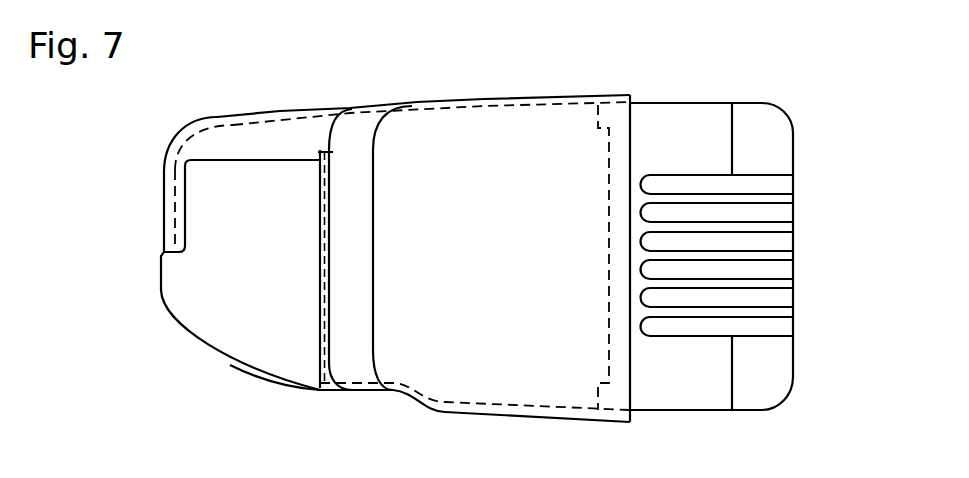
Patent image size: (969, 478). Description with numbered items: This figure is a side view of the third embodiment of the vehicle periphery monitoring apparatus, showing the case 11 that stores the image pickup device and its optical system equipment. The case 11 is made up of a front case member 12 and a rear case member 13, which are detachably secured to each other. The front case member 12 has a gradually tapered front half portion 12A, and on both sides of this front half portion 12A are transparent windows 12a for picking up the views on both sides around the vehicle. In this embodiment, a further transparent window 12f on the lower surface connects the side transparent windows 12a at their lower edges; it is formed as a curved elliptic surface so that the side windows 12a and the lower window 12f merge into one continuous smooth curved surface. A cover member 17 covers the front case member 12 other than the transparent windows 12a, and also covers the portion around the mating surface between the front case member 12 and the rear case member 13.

The case 11 is at (797, 80).
The front case member 12 is at (222, 284).
The transparent windows 12a is at (208, 188).
The front half portion 12A is at (204, 310).
The transparent window 12f is at (268, 348).
The rear case member 13 is at (795, 135).
The cover member 17 is at (484, 98).